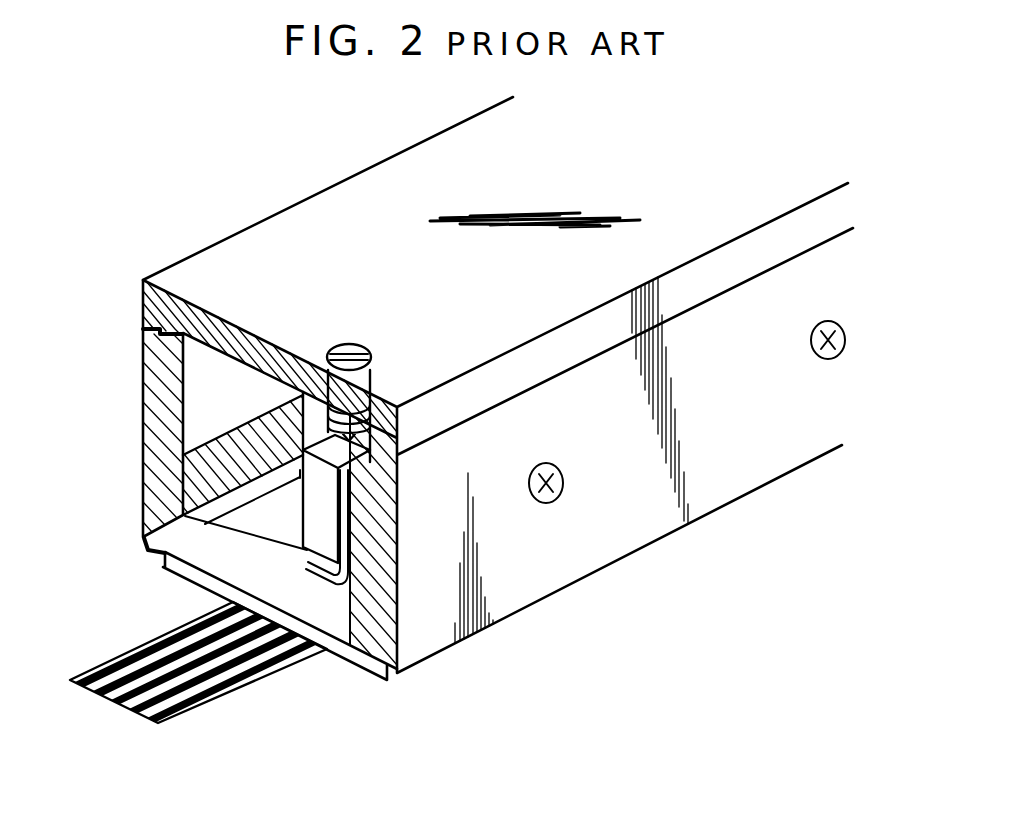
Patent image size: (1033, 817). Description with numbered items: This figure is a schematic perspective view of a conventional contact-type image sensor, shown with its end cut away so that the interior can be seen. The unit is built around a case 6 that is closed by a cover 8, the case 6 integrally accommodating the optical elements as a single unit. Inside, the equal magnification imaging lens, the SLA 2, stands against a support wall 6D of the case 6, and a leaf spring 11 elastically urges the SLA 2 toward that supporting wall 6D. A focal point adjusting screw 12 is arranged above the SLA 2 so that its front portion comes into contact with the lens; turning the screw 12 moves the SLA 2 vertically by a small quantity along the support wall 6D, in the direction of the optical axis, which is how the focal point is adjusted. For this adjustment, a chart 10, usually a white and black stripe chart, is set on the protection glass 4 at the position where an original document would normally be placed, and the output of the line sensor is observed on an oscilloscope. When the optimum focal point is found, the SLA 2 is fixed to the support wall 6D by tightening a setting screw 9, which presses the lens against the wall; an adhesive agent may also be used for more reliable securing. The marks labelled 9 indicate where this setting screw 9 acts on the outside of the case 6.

The cover 8 is at (412, 168).
The case 6 is at (155, 487).
The support wall 6D is at (305, 412).
The SLA 2 is at (253, 420).
The focal point adjusting screw 12 is at (350, 343).
The leaf spring 11 is at (385, 630).
The protection glass 4 is at (353, 656).
The chart 10 is at (188, 705).
The setting screw 9 is at (547, 504).